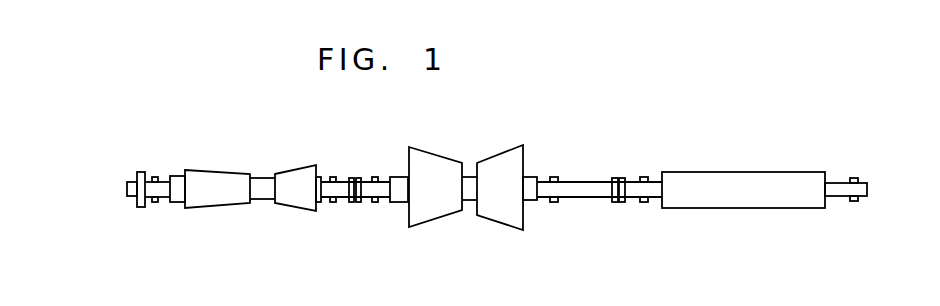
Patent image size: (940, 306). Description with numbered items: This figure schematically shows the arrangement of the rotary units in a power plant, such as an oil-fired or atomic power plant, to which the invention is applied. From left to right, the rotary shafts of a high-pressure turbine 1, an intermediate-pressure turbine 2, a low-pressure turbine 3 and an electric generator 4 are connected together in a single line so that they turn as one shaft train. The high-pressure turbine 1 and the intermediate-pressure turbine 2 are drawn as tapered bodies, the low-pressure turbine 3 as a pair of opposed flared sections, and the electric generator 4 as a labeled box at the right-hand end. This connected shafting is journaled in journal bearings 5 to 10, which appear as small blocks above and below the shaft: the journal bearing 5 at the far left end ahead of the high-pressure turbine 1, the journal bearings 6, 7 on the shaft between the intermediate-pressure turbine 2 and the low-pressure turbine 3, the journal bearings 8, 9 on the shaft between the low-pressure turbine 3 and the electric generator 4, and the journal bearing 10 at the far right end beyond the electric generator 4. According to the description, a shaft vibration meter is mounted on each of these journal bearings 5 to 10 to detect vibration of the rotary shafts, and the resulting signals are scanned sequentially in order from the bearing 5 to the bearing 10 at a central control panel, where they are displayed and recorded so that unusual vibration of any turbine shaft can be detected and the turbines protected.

The high-pressure turbine 1 is at (224, 172).
The intermediate-pressure turbine 2 is at (293, 175).
The low-pressure turbine 3 is at (496, 158).
The electric generator 4 is at (773, 172).
The journal bearing 5 is at (153, 177).
The journal bearing 6 is at (333, 177).
The journal bearing 7 is at (375, 177).
The journal bearing 8 is at (554, 177).
The journal bearing 9 is at (644, 177).
The journal bearing 10 is at (855, 177).